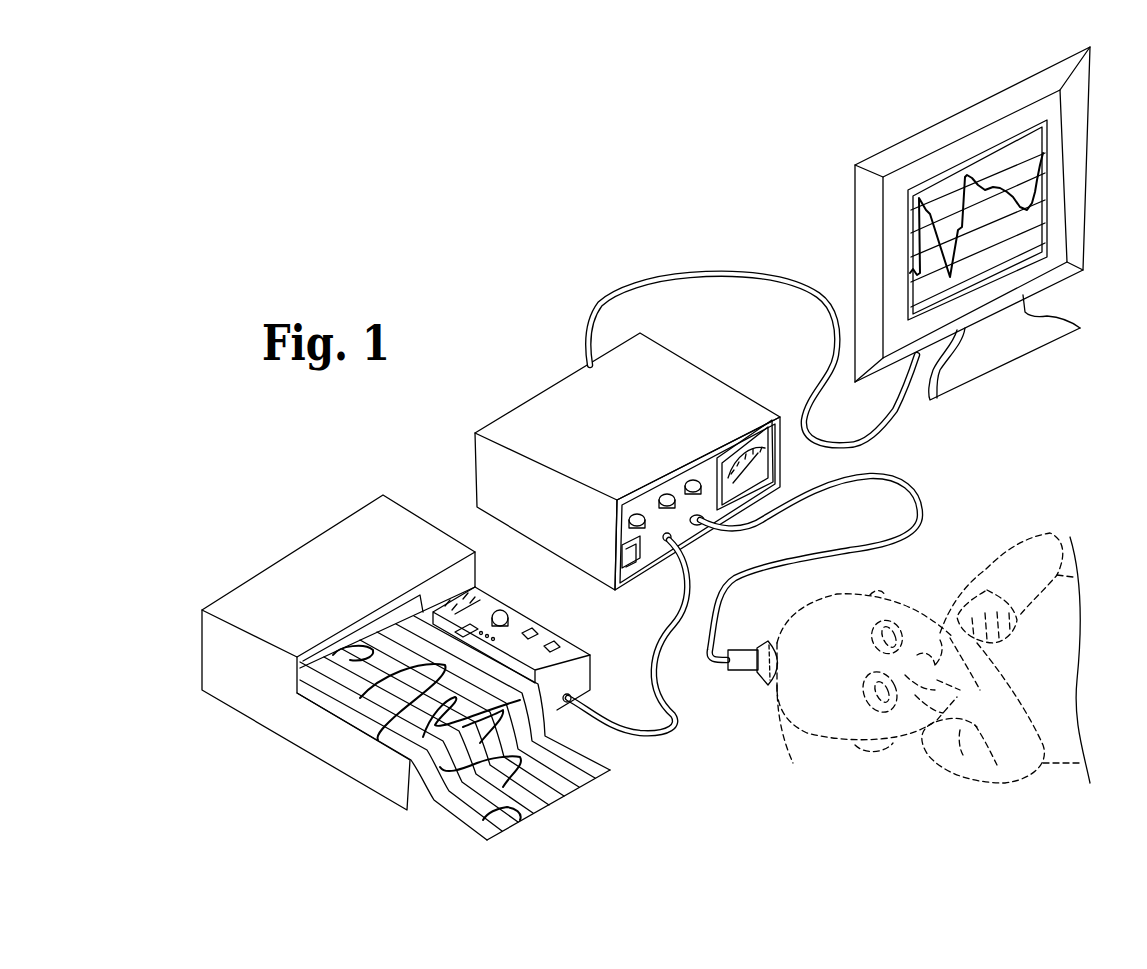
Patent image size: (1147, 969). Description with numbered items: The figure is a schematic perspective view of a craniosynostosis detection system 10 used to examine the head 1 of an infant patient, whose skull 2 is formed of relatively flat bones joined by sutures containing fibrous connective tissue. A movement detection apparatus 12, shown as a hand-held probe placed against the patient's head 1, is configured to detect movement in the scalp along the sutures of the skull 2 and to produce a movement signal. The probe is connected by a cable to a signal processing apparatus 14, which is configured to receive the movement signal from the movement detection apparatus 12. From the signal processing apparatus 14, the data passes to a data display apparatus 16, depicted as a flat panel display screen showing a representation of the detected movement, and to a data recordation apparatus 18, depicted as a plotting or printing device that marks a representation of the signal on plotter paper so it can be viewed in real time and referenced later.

The head 1 is at (907, 707).
The skull 2 is at (933, 680).
The craniosynostosis detection system 10 is at (348, 430).
The movement detection apparatus 12 is at (759, 684).
The signal processing apparatus 14 is at (713, 403).
The data display apparatus 16 is at (1073, 158).
The data recordation apparatus 18 is at (235, 665).